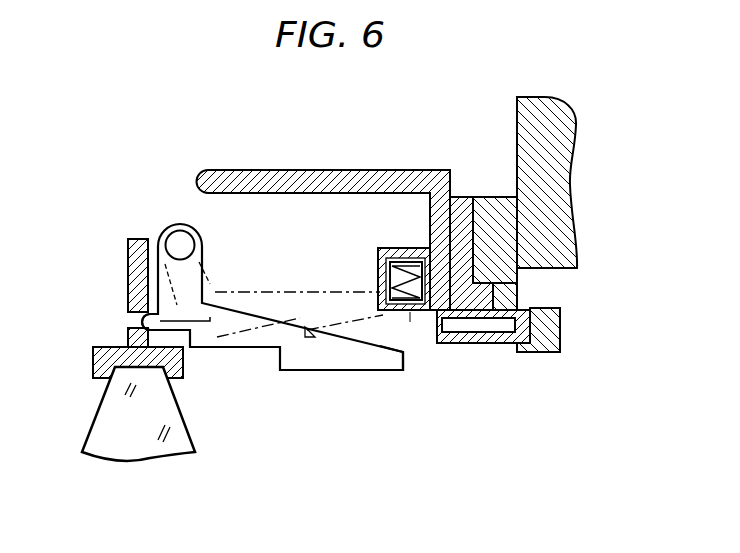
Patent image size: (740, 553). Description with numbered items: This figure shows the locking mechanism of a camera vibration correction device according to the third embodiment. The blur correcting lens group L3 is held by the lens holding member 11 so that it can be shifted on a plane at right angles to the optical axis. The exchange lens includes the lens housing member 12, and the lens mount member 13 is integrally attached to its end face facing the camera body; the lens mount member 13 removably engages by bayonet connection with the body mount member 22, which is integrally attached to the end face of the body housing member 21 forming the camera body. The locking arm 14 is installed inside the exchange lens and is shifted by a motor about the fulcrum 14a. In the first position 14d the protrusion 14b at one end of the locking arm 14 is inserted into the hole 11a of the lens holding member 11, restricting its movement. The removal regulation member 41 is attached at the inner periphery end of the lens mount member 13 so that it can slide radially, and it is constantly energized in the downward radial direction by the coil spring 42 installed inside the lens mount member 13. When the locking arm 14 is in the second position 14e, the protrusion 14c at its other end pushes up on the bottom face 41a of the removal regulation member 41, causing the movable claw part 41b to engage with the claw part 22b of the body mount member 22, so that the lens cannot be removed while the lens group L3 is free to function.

The lens holding member 11 is at (128, 262).
The hole 11a is at (128, 318).
The lens housing member 12 is at (272, 170).
The lens mount member 13 is at (454, 296).
The locking arm 14 is at (305, 357).
The fulcrum 14a is at (180, 242).
The protrusion 14b is at (140, 322).
The protrusion 14c is at (378, 348).
The first position 14d is at (235, 348).
The second position 14e is at (283, 291).
The body housing member 21 is at (553, 218).
The body mount member 22 is at (490, 197).
The claw part 22b is at (517, 292).
The removal regulation member 41 is at (492, 345).
The bottom face 41a is at (410, 311).
The movable claw part 41b is at (547, 352).
The coil spring 42 is at (402, 250).
The blur correcting lens group L3 is at (163, 416).